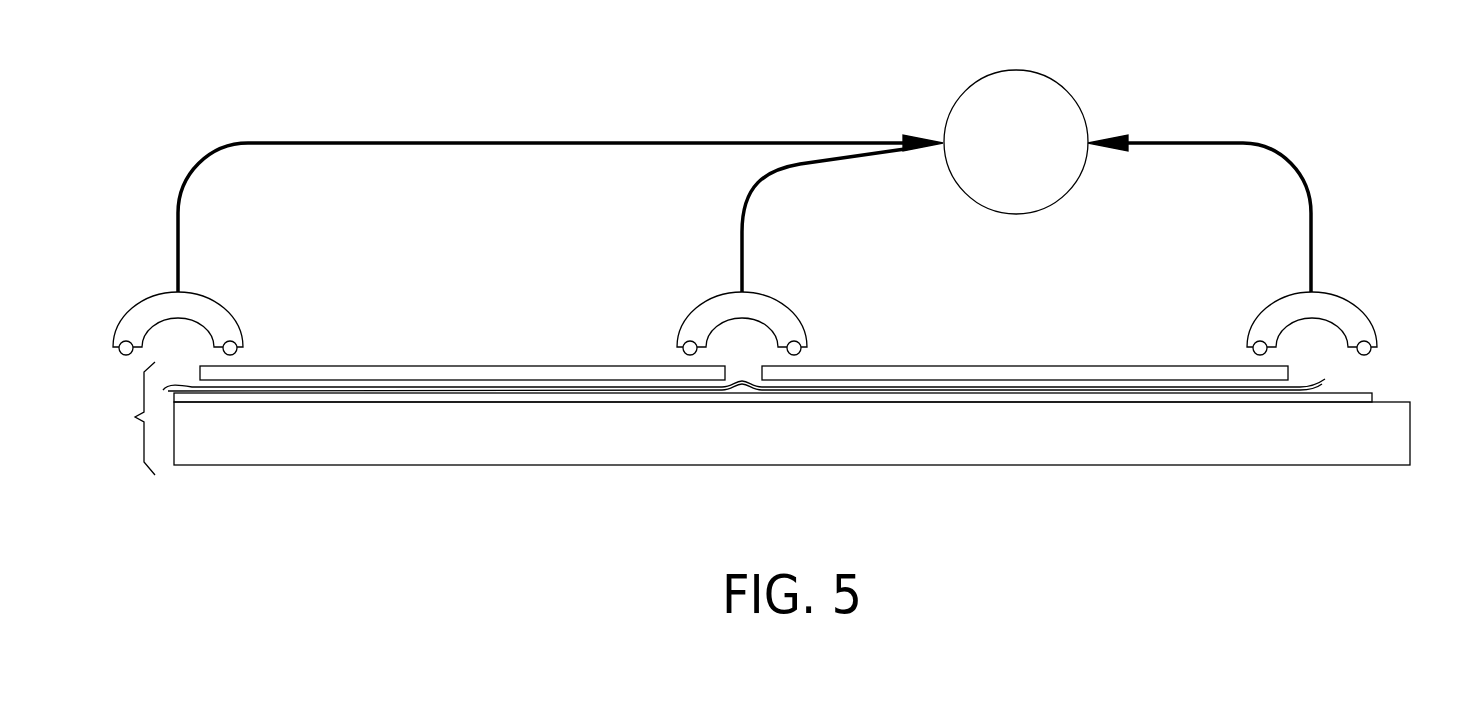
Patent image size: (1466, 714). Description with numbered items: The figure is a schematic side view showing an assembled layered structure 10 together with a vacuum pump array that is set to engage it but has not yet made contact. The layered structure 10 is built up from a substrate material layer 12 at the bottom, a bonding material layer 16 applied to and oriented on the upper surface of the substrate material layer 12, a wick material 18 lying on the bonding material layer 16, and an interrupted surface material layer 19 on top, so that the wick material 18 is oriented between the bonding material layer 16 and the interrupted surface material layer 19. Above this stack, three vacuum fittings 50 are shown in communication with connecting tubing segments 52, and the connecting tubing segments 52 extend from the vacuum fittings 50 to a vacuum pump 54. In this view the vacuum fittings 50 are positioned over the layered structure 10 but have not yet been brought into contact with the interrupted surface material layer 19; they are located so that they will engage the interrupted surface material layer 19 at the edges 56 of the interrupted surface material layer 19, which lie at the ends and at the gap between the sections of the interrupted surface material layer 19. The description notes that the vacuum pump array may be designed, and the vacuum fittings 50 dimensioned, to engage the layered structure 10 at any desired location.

The layered structure 10 is at (128, 418).
The substrate material layer 12 is at (1388, 455).
The bonding material layer 16 is at (1372, 396).
The wick material 18 is at (1322, 383).
The interrupted surface material layer 19 is at (438, 365).
The vacuum fittings 50 is at (213, 318).
The connecting tubing segments 52 is at (405, 140).
The vacuum pump 54 is at (983, 88).
The edges 56 is at (200, 372).